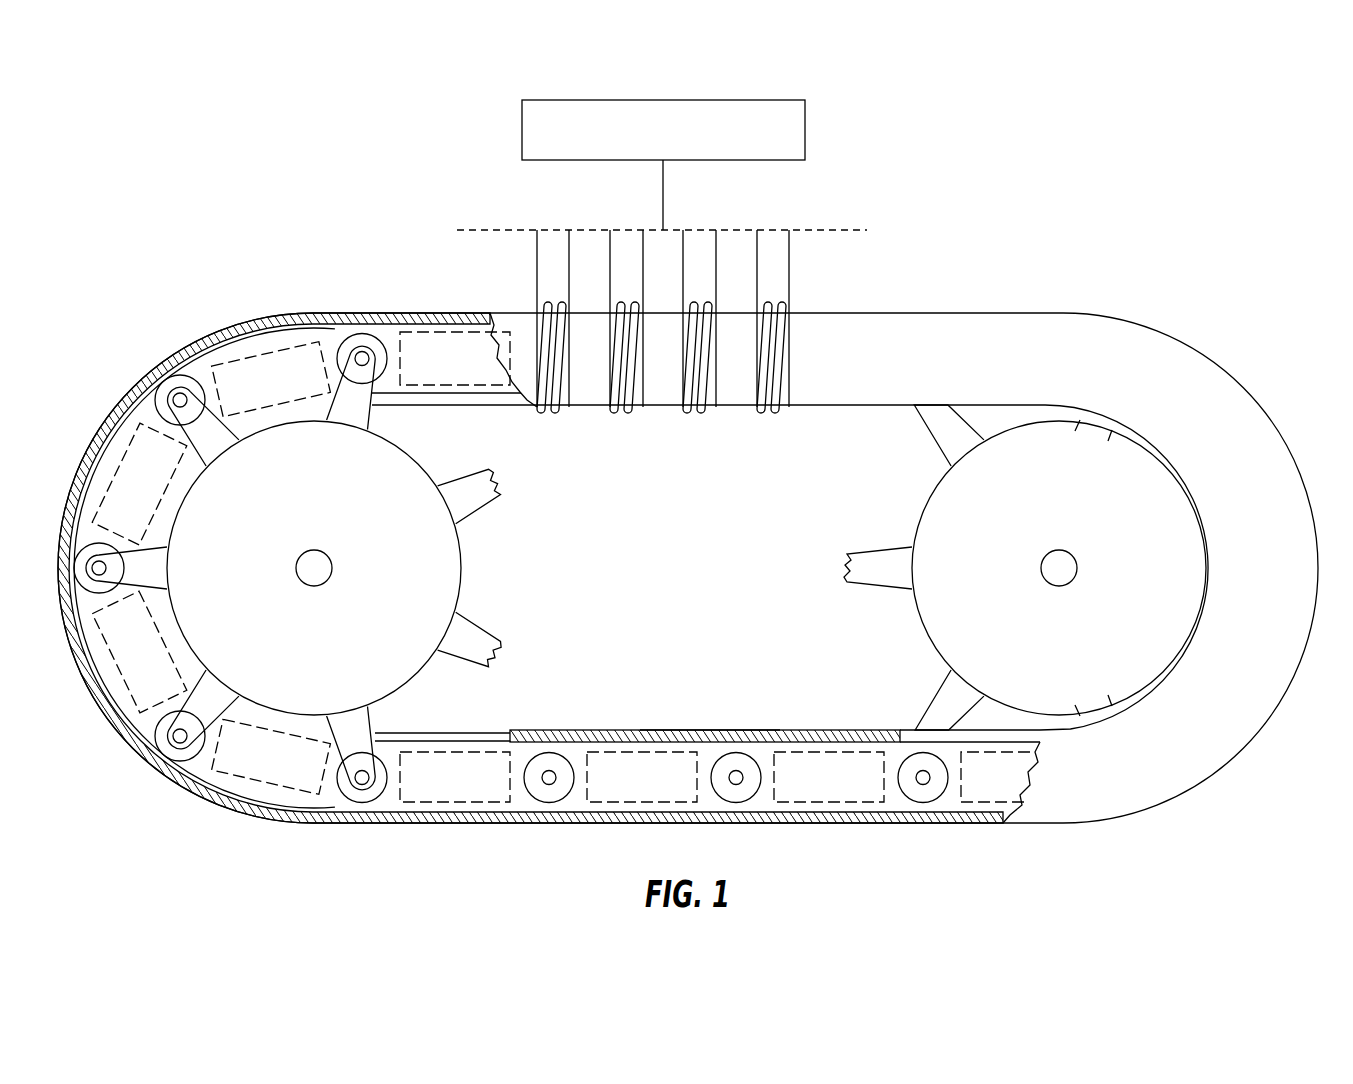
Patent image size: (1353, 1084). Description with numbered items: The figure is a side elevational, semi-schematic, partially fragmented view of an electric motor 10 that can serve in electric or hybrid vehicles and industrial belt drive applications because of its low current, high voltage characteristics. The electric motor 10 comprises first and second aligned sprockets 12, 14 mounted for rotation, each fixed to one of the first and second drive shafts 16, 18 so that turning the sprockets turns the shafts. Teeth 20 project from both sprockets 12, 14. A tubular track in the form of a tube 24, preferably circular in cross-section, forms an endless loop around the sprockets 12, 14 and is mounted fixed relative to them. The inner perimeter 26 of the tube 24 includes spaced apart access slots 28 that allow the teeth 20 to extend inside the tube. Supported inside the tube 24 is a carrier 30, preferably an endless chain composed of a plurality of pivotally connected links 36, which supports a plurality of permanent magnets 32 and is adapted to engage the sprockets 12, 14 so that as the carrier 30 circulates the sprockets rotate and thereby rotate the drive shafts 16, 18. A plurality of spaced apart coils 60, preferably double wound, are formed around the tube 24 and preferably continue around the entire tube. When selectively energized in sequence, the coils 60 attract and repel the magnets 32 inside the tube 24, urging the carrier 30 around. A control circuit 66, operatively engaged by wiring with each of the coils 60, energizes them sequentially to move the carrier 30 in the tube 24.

The electric motor 10 is at (1082, 215).
The first sprocket 12 is at (448, 555).
The second sprocket 14 is at (928, 536).
The first drive shaft 16 is at (315, 568).
The second drive shaft 18 is at (1059, 568).
The teeth 20 is at (503, 630).
The tube 24 is at (1199, 350).
The inner perimeter 26 is at (704, 730).
The access slots 28 is at (510, 407).
The carrier 30 is at (303, 798).
The permanent magnets 32 is at (462, 795).
The links 36 is at (247, 790).
The coils 60 is at (800, 272).
The control circuit 66 is at (805, 128).